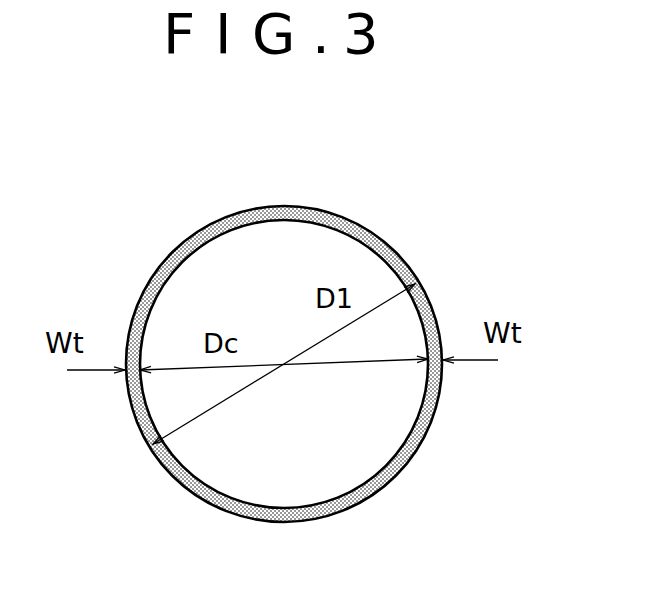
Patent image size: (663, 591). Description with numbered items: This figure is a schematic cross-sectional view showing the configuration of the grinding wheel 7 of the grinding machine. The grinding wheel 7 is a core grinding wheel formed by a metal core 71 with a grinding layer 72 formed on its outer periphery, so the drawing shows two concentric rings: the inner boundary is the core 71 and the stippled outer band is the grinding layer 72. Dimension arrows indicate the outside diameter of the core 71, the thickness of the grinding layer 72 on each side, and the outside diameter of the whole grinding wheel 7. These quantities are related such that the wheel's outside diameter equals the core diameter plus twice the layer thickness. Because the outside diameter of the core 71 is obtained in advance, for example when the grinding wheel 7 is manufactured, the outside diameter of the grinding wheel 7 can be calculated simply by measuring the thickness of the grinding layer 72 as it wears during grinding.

The grinding wheel 7 is at (238, 129).
The core 71 is at (197, 267).
The grinding layer 72 is at (240, 221).